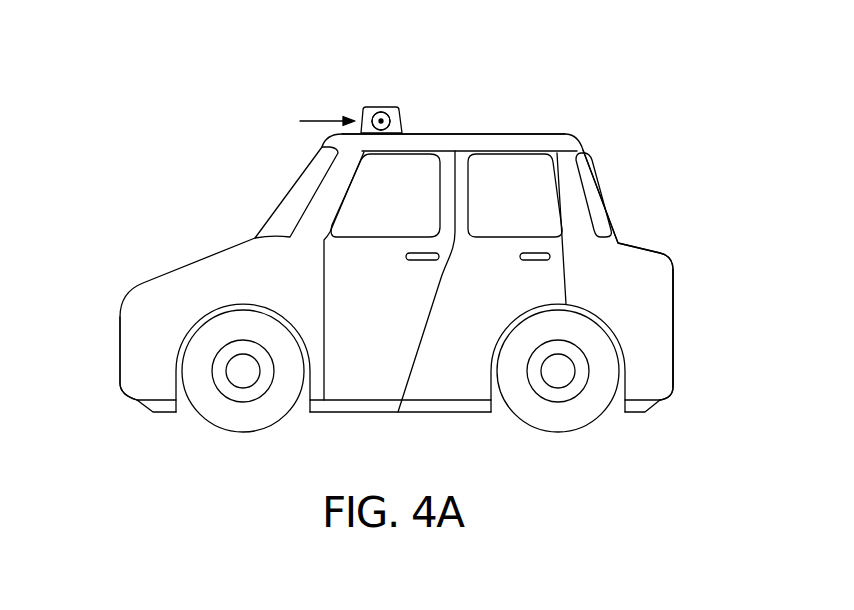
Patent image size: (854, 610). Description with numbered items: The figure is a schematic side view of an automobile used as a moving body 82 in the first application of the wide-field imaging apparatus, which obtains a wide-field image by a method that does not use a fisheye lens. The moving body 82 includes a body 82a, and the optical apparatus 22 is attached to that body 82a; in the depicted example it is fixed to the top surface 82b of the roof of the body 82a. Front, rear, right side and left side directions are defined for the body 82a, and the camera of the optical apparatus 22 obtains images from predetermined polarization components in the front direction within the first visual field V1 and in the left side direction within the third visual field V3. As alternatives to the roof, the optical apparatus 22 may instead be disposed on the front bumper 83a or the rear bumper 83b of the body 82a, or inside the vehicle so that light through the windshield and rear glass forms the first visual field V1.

The moving body 82 is at (403, 223).
The body 82a is at (628, 263).
The top surface of the roof 82b is at (461, 133).
The front bumper 83a is at (120, 338).
The rear bumper 83b is at (672, 312).
The optical apparatus 22 is at (380, 106).
The first visual field V1 is at (327, 110).
The third visual field V3 is at (393, 106).